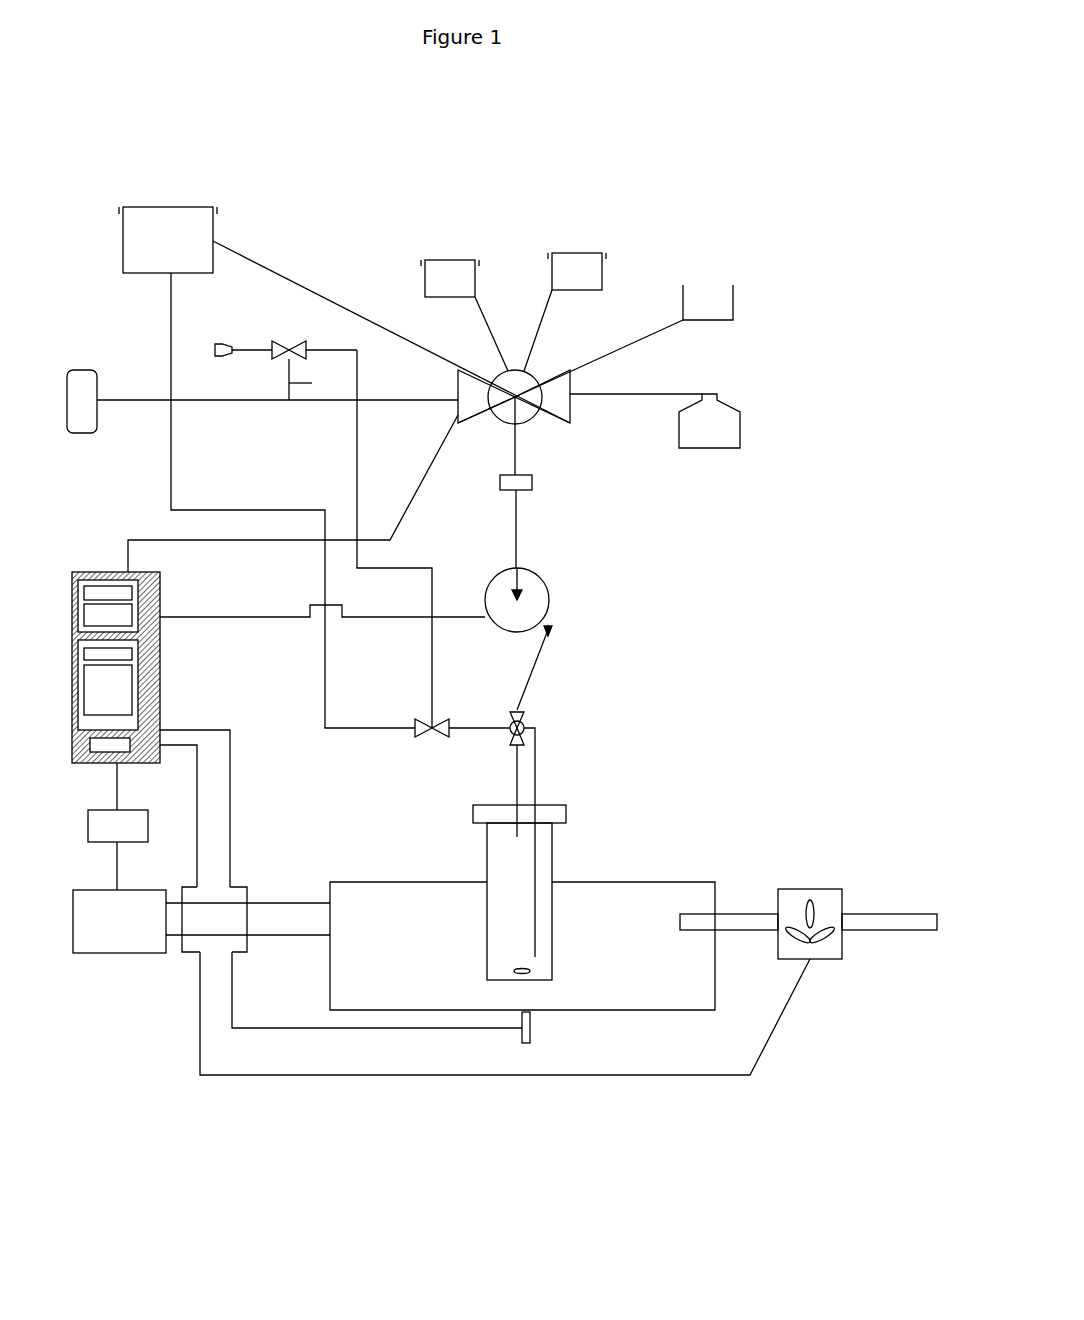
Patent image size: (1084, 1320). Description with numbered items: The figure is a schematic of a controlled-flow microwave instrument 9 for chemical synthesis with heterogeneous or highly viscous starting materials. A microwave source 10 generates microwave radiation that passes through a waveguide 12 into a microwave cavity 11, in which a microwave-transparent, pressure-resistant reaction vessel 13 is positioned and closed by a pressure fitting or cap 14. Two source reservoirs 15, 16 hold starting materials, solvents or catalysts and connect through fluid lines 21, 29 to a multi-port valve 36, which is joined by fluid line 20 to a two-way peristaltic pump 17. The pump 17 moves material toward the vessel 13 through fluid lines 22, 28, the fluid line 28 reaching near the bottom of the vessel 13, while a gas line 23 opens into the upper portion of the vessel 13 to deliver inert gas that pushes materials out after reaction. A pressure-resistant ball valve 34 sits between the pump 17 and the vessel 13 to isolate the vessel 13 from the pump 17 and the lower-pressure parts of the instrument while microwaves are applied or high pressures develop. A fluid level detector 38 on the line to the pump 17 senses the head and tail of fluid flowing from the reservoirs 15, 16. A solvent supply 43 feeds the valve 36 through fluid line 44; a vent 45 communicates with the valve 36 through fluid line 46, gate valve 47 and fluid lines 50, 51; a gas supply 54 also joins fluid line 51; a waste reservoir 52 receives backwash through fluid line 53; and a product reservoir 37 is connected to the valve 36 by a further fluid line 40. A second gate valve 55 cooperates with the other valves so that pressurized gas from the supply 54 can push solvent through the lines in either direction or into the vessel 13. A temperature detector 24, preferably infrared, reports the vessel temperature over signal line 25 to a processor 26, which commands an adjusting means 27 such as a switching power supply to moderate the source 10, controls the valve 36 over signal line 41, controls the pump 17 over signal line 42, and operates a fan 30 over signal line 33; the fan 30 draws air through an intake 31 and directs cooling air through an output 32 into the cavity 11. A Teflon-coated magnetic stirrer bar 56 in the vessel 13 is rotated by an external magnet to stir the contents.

The system 9 is at (689, 236).
The microwave source 10 is at (119, 921).
The microwave cavity 11 is at (664, 882).
The waveguide 12 is at (232, 841).
The pressure resistant reaction vessel 13 is at (485, 884).
The cap 14 is at (470, 812).
The source reservoir 15 is at (464, 258).
The source reservoir 16 is at (575, 252).
The peristaltic pump 17 is at (550, 592).
The fluid line 20 is at (517, 553).
The fluid line 21 is at (487, 327).
The fluid line 22 is at (538, 663).
The gas line 23 is at (518, 790).
The temperature detector 24 is at (532, 1017).
The signal line 25 is at (380, 1030).
The processor 26 is at (162, 693).
The adjusting means 27 is at (118, 826).
The fluid line 28 is at (537, 785).
The fluid line 29 is at (533, 336).
The fan 30 is at (785, 888).
The air intake 31 is at (883, 906).
The output 32 is at (737, 913).
The signal line 33 is at (660, 1075).
The pressure resistant valve 34 is at (535, 718).
The multi-port valve 36 is at (572, 406).
The product reservoir 37 is at (740, 422).
The fluid level detector 38 is at (532, 483).
The line to bottle 40 is at (658, 393).
The signal line 41 is at (162, 538).
The signal line 42 is at (293, 617).
The solvent supply 43 is at (168, 240).
The fluid line 44 is at (267, 268).
The vent 45 is at (220, 343).
The fluid line 46 is at (248, 347).
The gate valve 47 is at (282, 360).
The fluid line 50 is at (316, 384).
The fluid line 51 is at (378, 402).
The waste reservoir 52 is at (735, 312).
The fluid line 53 is at (627, 337).
The gas supply 54 is at (86, 370).
The second gate valve 55 is at (428, 735).
The magnetic stirrer bar 56 is at (526, 975).